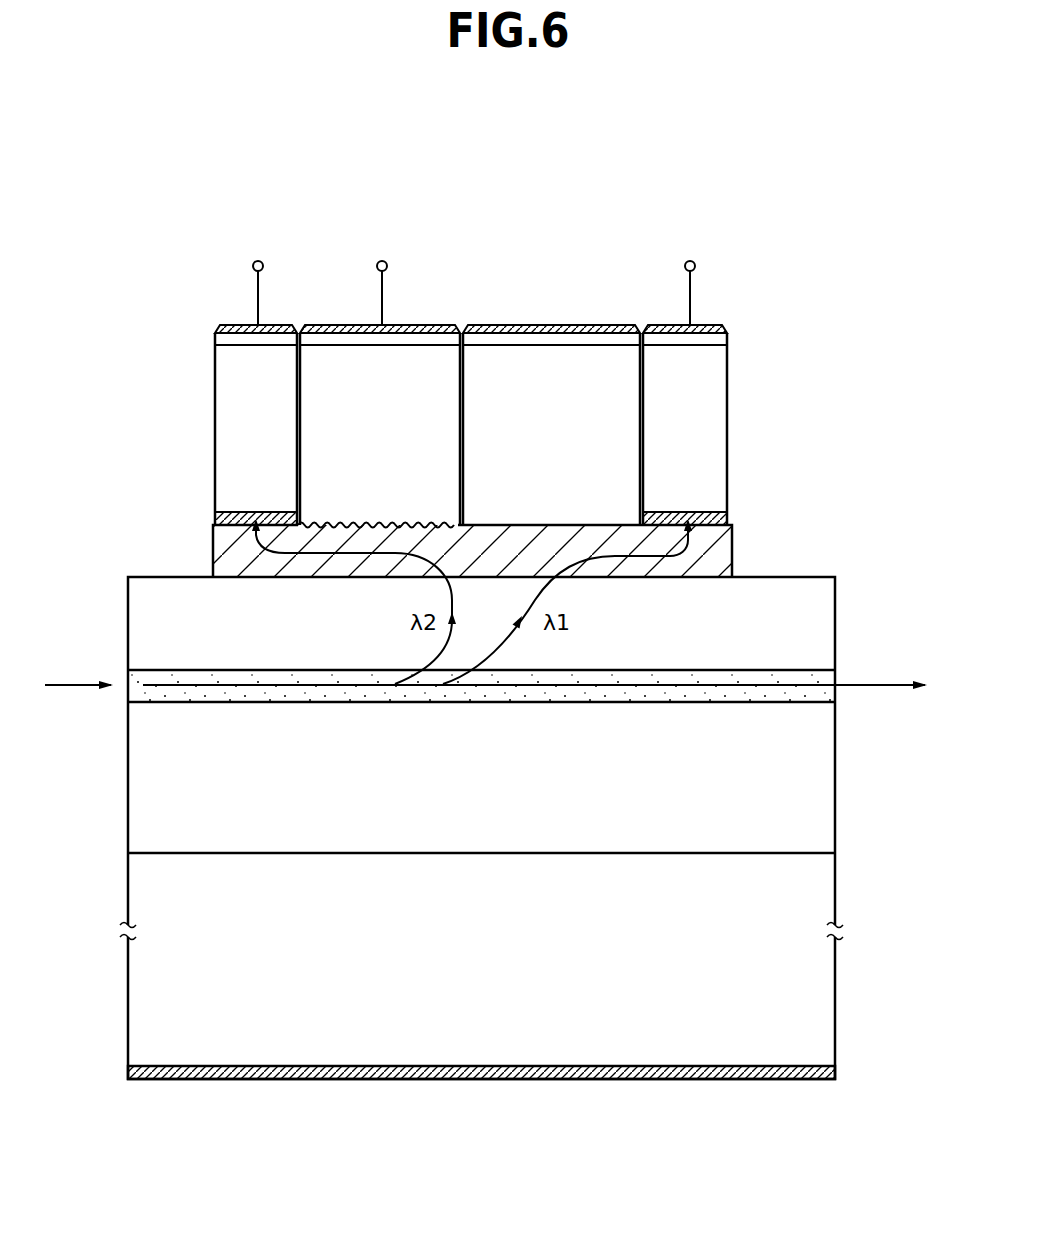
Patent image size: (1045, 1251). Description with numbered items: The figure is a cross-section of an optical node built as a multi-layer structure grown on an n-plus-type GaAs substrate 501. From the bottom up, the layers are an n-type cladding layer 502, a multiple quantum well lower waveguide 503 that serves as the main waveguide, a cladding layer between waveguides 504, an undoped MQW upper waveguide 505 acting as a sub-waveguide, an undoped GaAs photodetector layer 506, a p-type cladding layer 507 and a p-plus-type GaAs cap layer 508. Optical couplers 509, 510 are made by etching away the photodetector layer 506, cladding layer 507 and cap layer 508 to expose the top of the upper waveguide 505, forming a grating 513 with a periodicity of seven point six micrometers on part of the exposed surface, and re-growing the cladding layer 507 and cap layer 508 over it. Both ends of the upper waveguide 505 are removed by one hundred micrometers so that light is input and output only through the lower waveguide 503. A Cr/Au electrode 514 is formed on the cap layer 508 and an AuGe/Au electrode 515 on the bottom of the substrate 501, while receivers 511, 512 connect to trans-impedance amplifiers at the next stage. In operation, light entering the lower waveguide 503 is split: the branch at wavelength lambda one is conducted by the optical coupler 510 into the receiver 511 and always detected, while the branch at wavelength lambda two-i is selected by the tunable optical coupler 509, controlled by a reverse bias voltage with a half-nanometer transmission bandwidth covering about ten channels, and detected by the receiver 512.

The substrate 501 is at (823, 878).
The cladding layer 502 is at (823, 802).
The lower waveguide 503 is at (828, 693).
The cladding layer between waveguides 504 is at (828, 627).
The upper waveguide 505 is at (723, 550).
The photodetector layer 506 is at (725, 515).
The cladding layer 507 is at (717, 408).
The cap layer 508 is at (718, 340).
The tunable type optical coupler 509 is at (303, 228).
The optical coupler 510 is at (470, 228).
The receiver 511 is at (647, 228).
The receiver 512 is at (217, 228).
The grating 513 is at (357, 523).
The electrode 514 is at (715, 323).
The electrode 515 is at (835, 1076).